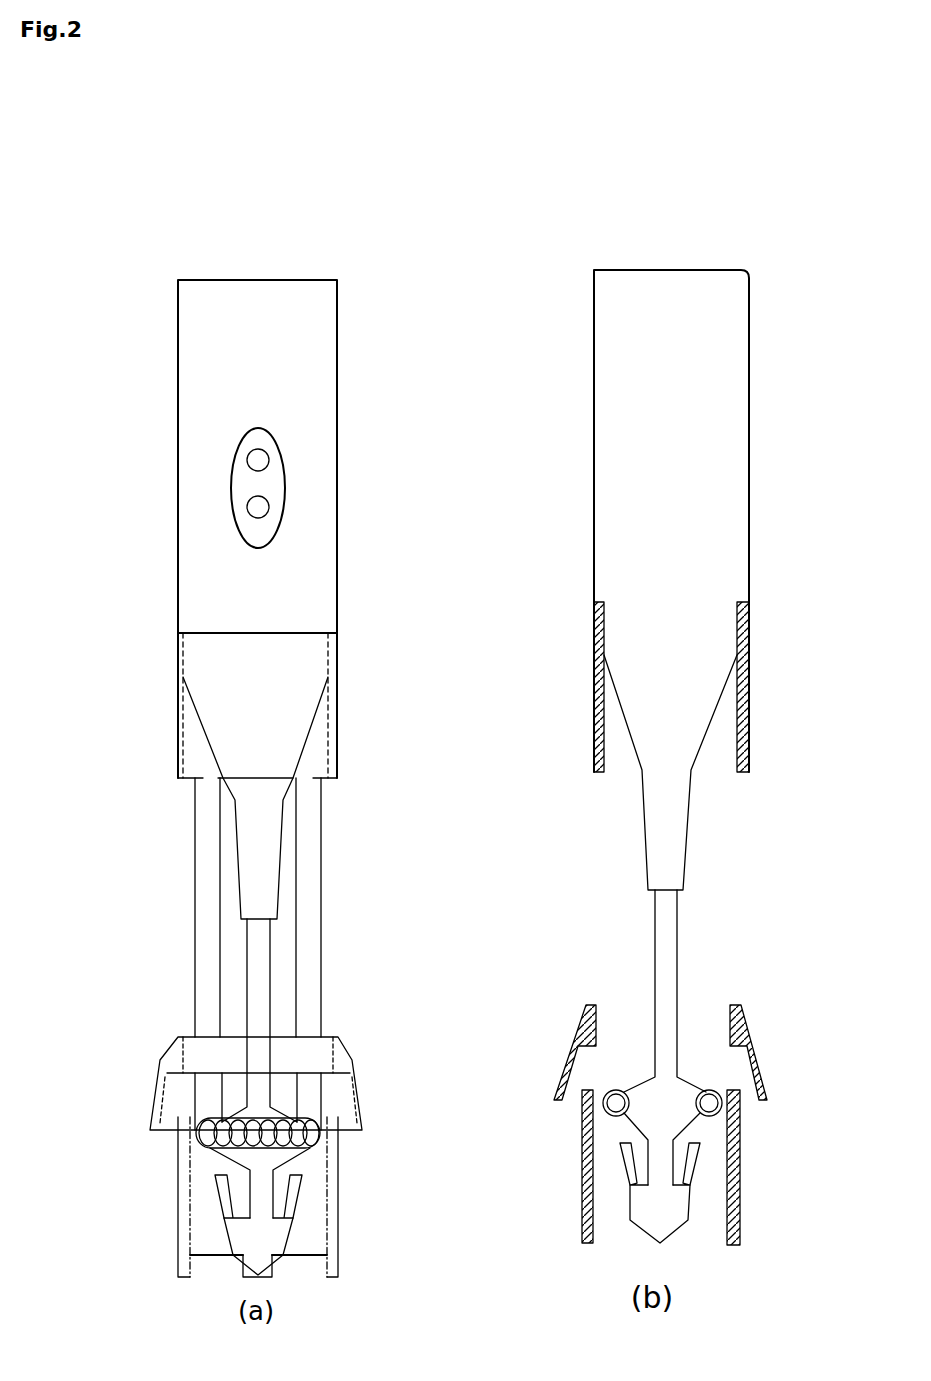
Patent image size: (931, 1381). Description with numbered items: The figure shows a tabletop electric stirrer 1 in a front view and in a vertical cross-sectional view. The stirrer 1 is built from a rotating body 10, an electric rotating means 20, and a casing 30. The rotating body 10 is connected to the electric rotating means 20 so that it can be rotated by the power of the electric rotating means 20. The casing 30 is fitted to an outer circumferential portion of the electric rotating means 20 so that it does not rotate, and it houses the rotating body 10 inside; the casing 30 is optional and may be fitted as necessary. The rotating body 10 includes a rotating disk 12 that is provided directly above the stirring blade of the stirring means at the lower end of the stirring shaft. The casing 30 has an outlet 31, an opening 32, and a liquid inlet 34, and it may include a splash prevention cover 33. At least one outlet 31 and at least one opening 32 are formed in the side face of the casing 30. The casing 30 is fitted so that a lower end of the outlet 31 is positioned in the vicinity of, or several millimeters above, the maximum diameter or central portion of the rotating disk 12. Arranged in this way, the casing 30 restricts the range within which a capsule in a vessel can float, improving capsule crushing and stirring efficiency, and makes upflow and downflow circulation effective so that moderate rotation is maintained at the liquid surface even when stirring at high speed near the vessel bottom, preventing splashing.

The tabletop electric stirrer 1 is at (194, 238).
The electric rotating means 20 is at (312, 360).
The casing 30 is at (315, 745).
The rotating body 10 is at (258, 938).
The opening 32 is at (280, 987).
The splash prevention cover 33 is at (303, 1057).
The outlet 31 is at (280, 1098).
The rotating disk 12 is at (262, 1158).
The liquid inlet 34 is at (302, 1268).